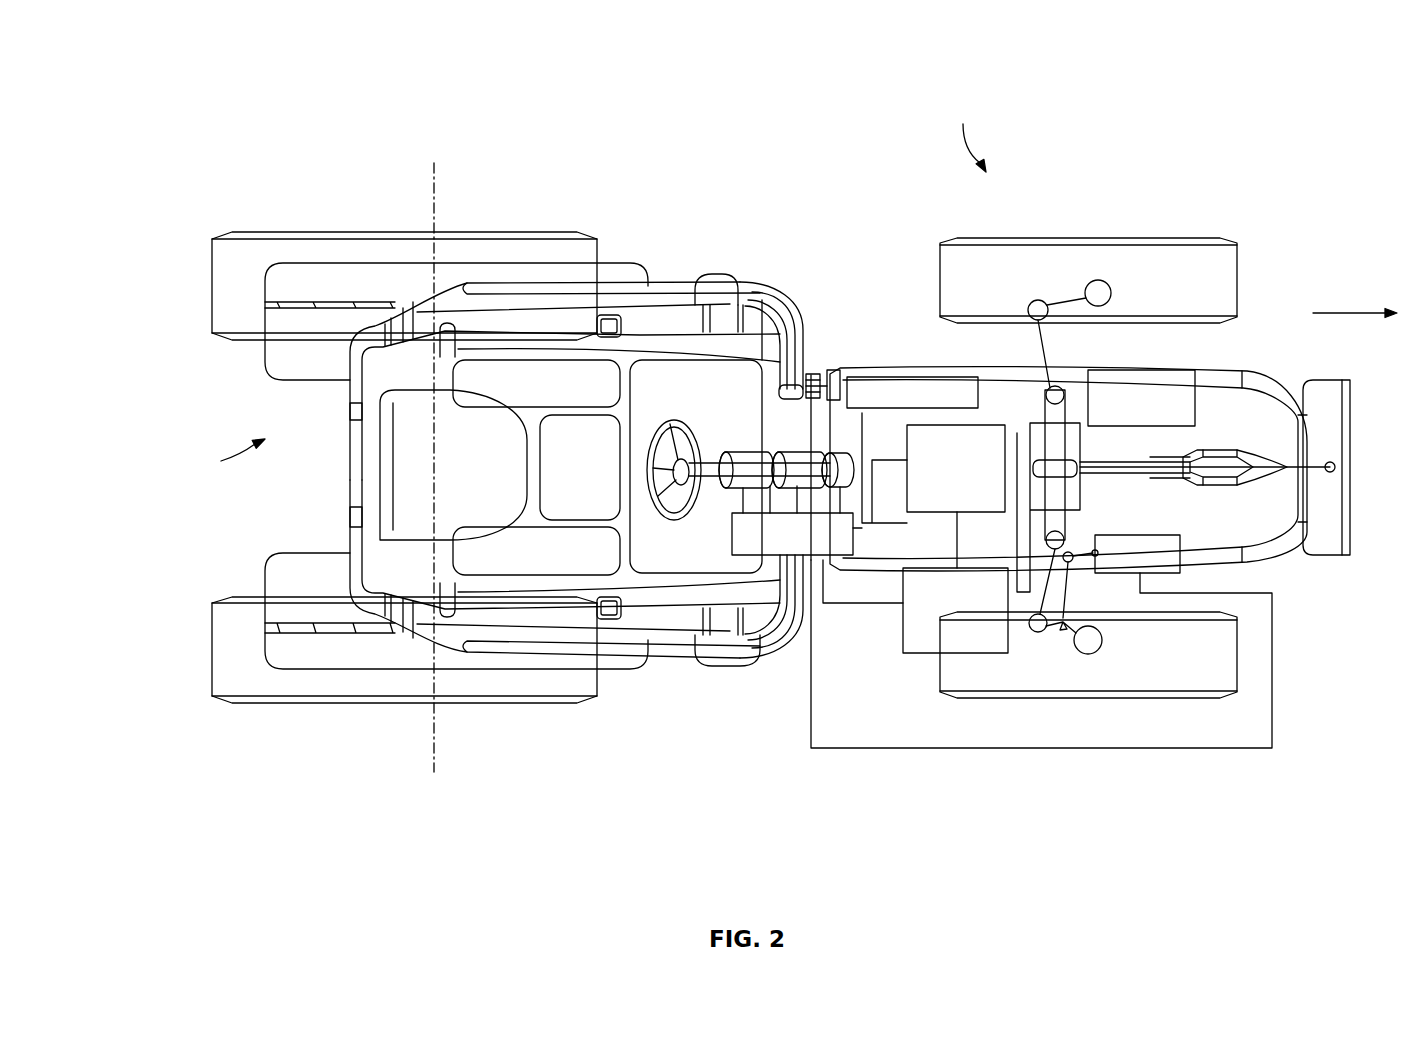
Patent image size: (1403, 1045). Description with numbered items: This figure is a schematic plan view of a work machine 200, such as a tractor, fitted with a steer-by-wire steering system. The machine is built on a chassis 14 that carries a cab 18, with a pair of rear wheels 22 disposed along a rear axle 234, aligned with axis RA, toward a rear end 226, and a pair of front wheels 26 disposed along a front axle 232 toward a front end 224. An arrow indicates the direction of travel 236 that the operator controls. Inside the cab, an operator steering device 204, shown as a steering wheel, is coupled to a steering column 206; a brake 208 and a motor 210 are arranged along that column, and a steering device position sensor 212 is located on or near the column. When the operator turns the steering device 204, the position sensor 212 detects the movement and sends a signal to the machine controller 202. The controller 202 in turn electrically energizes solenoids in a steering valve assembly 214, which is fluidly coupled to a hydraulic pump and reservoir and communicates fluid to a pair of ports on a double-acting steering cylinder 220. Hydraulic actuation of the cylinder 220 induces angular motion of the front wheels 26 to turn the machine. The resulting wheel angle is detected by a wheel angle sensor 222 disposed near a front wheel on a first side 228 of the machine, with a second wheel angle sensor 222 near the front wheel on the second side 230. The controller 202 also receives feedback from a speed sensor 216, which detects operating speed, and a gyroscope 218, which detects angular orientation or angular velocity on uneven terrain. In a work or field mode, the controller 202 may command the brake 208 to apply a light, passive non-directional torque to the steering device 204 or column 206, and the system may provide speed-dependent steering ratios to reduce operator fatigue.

The chassis 14 is at (870, 367).
The cab 18 is at (548, 340).
The rear wheels 22 is at (327, 233).
The front wheels 26 is at (1152, 238).
The work machine 200 is at (192, 62).
The machine controller 202 is at (745, 557).
The operator steering device 204 is at (664, 440).
The steering column 206 is at (712, 458).
The brake 208 is at (745, 452).
The motor 210 is at (790, 452).
The steering device position sensor 212 is at (843, 453).
The steering valve assembly 214 is at (912, 657).
The speed sensor 216 is at (990, 423).
The gyroscope 218 is at (923, 377).
The double-acting steering cylinder 220 is at (1078, 395).
The wheel angle sensor 222 is at (1167, 535).
The front end 224 is at (1365, 490).
The rear end 226 is at (218, 458).
The first side 228 is at (967, 135).
The second side 230 is at (782, 790).
The front axle 232 is at (1031, 545).
The rear axle 234 is at (422, 465).
The direction of travel 236 is at (1355, 313).